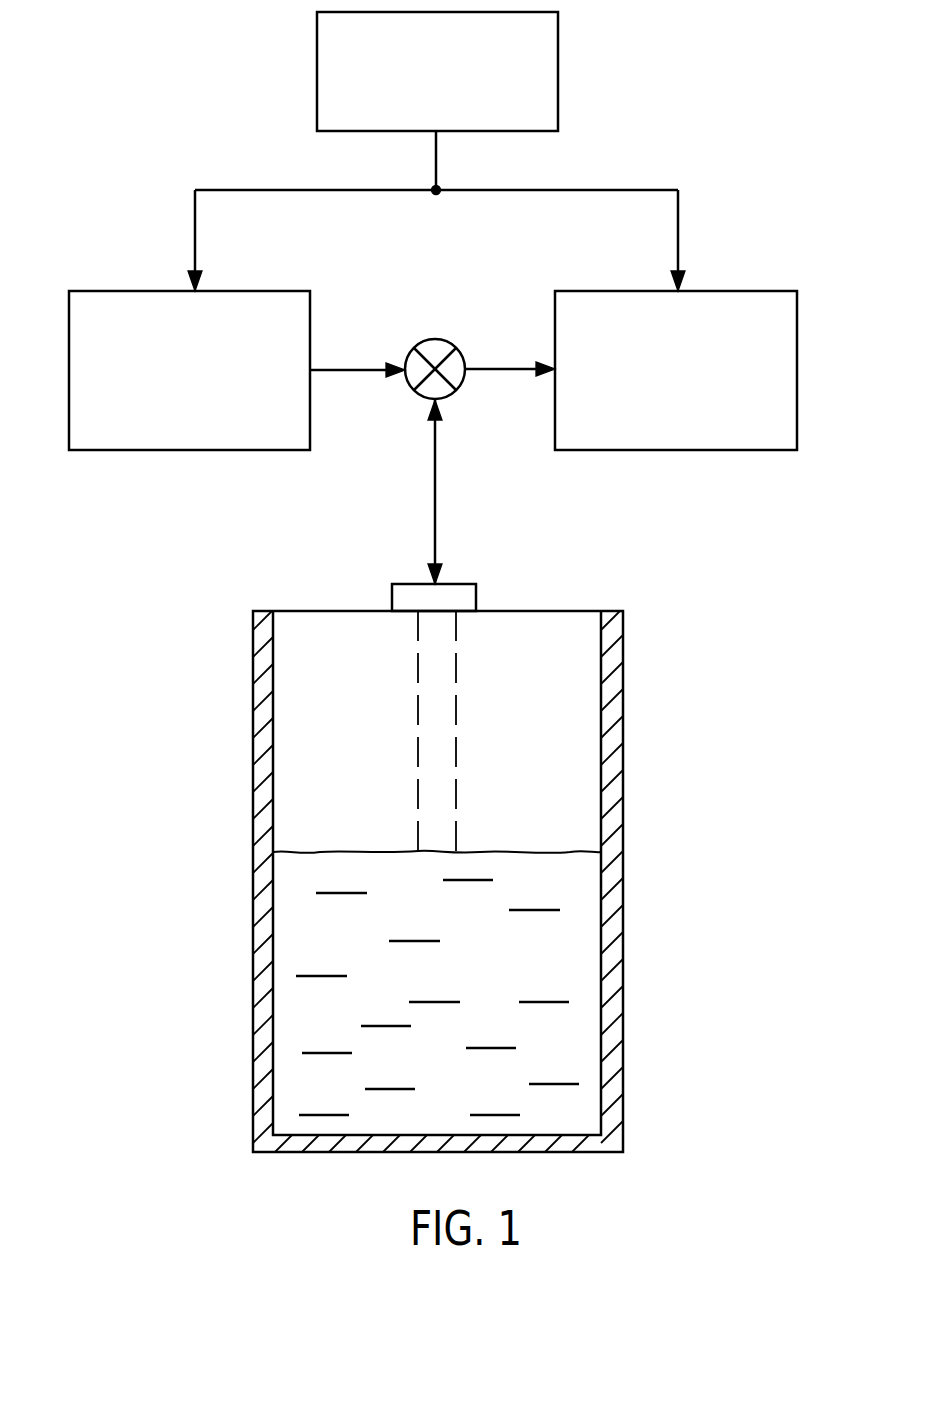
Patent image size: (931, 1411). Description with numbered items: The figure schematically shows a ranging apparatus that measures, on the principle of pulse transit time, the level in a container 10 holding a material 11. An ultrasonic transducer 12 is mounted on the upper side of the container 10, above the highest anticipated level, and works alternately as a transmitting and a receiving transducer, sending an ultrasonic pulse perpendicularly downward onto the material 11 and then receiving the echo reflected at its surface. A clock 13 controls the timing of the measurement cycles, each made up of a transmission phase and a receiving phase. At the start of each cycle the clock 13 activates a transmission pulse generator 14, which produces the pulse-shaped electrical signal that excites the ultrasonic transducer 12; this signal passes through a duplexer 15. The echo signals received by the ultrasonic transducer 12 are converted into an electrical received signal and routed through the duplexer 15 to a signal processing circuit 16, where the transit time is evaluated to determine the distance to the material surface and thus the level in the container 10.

The container 10 is at (257, 641).
The material 11 is at (302, 938).
The ultrasonic transducer 12 is at (456, 584).
The clock 13 is at (558, 57).
The transmission pulse generator 14 is at (117, 291).
The duplexer 15 is at (438, 339).
The signal processing circuit 16 is at (750, 291).